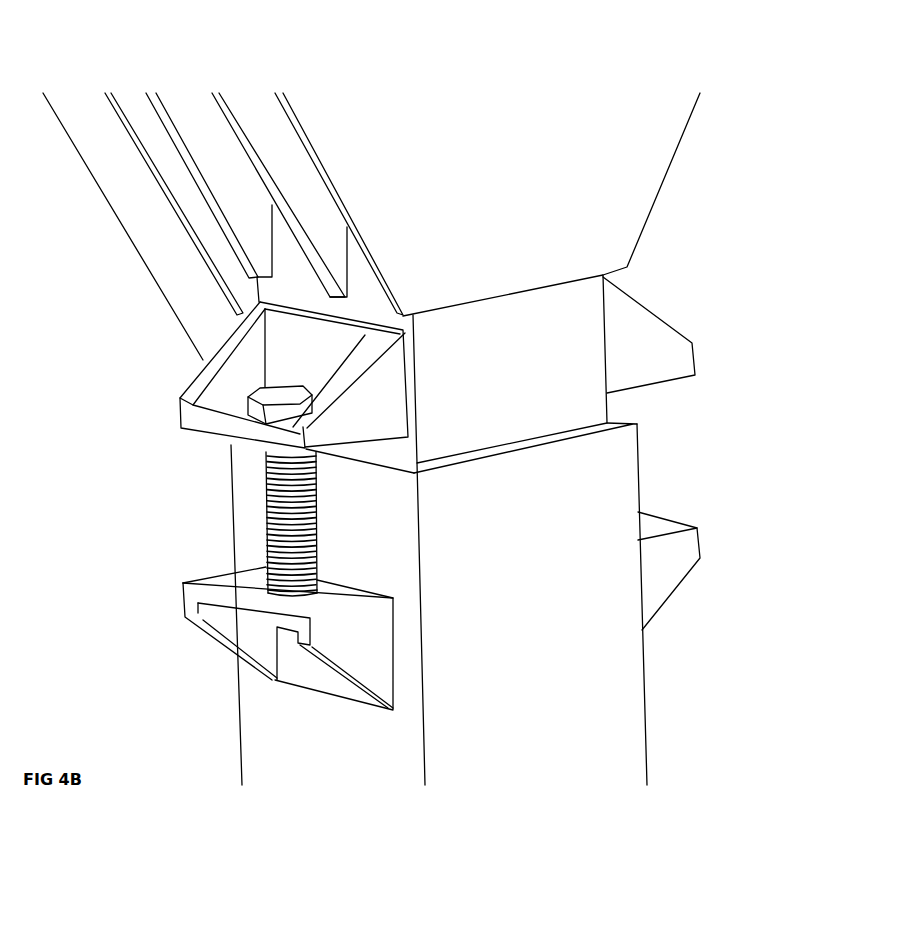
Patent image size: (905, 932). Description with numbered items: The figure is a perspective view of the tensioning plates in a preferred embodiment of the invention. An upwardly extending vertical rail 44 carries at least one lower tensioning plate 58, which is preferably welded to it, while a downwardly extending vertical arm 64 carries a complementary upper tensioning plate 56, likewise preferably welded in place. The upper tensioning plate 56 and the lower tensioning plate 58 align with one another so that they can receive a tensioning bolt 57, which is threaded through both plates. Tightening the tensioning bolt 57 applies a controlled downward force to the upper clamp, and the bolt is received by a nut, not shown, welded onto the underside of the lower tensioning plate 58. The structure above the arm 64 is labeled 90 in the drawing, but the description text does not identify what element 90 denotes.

The upper panel / roof structure 90 is at (521, 215).
The downwardly extending vertical arm 64 is at (524, 378).
The upwardly extending vertical rail 44 is at (527, 569).
The upper tensioning plate 56 is at (167, 404).
The tensioning bolt 57 is at (320, 508).
The lower tensioning plate 58 is at (176, 598).